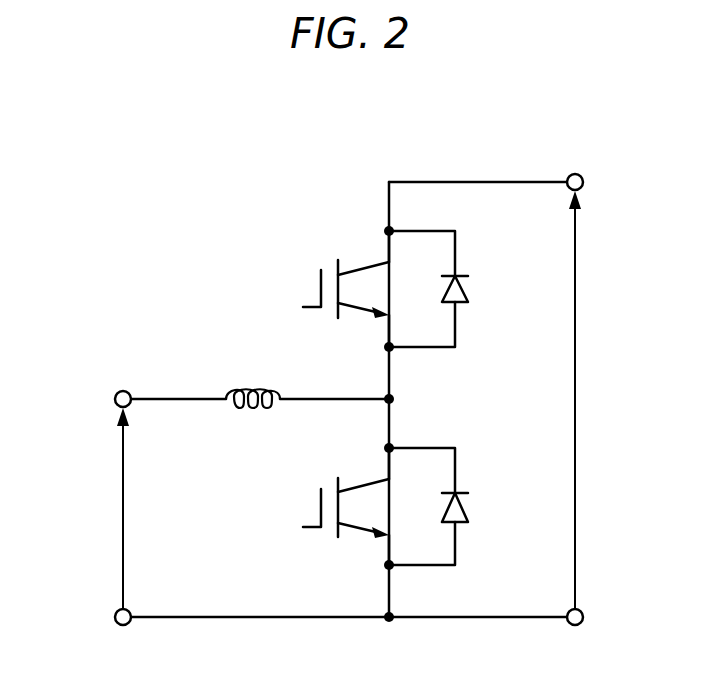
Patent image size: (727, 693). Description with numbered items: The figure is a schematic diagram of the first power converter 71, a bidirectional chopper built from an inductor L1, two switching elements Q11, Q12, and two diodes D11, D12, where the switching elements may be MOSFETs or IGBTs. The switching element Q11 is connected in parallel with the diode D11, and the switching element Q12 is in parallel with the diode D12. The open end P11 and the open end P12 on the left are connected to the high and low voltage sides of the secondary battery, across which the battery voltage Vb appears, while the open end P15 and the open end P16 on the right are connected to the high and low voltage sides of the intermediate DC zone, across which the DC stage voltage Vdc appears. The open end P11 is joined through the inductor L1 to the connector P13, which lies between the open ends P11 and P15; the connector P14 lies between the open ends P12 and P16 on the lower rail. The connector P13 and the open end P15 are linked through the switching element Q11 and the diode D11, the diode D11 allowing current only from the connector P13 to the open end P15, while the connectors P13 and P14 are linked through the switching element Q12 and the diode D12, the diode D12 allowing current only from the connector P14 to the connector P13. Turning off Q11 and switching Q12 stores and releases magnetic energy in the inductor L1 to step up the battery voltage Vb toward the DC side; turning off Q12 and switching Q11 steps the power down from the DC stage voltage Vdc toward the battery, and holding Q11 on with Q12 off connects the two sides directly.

The first power converter 71 is at (558, 151).
The open end P11 is at (112, 398).
The open end P12 is at (112, 616).
The connector P13 is at (394, 398).
The connector P14 is at (392, 624).
The open end P15 is at (587, 181).
The open end P16 is at (587, 616).
The inductor L1 is at (256, 384).
The switching element Q11 is at (321, 288).
The switching element Q12 is at (321, 508).
The diode D11 is at (466, 288).
The diode D12 is at (466, 508).
The battery voltage Vb is at (138, 508).
The DC stage voltage Vdc is at (595, 399).